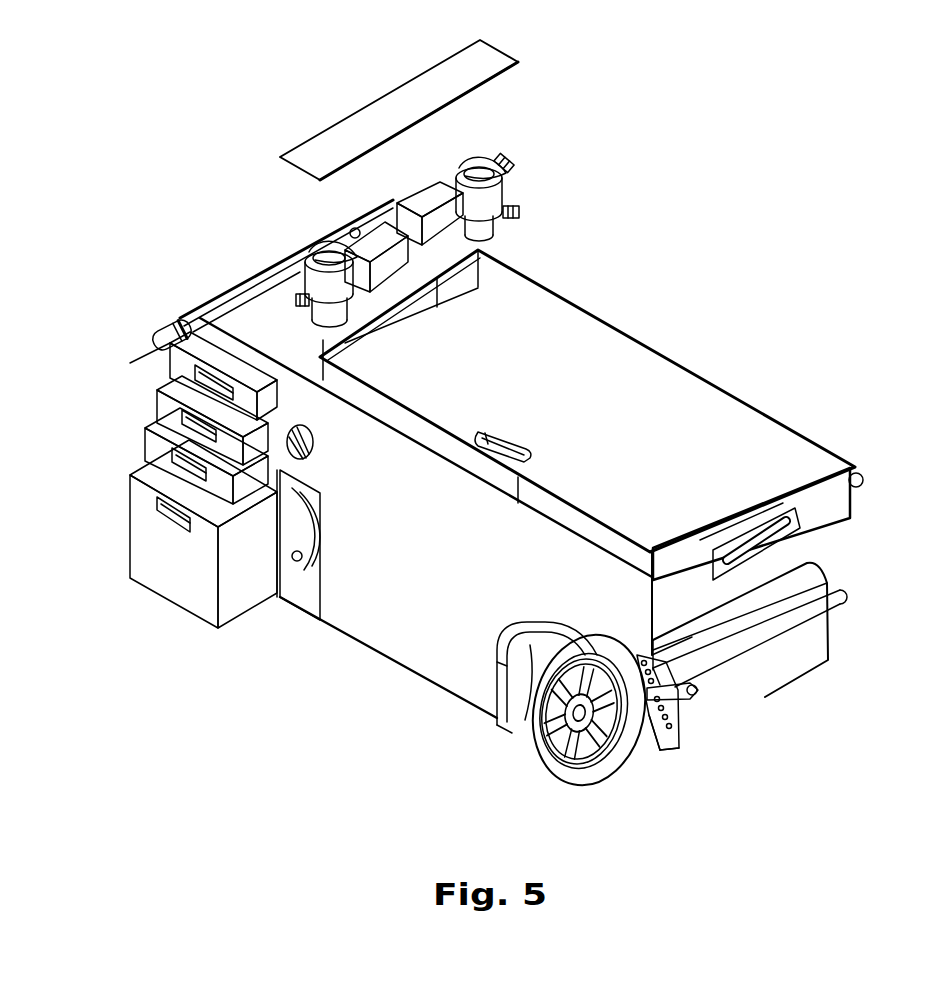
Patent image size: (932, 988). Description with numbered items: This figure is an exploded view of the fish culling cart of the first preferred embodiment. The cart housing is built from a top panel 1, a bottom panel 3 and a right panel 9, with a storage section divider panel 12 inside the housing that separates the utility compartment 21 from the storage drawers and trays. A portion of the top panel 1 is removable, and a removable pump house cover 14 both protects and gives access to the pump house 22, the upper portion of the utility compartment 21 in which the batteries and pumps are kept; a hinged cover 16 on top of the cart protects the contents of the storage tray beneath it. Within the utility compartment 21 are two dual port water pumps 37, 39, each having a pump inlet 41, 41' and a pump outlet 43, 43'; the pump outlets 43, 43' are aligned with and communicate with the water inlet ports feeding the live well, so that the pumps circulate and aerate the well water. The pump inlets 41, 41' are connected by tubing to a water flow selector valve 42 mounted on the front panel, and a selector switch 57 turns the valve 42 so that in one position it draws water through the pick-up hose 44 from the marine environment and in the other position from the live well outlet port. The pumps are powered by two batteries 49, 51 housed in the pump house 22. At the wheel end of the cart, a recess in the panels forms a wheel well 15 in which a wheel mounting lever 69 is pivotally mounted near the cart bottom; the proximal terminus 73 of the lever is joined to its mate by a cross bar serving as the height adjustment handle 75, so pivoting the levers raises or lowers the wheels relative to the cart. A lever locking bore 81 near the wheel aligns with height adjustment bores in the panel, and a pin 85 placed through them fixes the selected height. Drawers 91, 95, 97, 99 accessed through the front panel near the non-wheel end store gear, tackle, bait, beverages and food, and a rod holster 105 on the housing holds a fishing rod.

The top panel 1 is at (640, 388).
The bottom panel 3 is at (432, 686).
The right panel 9 is at (816, 647).
The storage section divider panel 12 is at (437, 307).
The pump house cover 14 is at (493, 55).
The wheel well 15 is at (528, 652).
The hinged cover 16 is at (262, 292).
The utility compartment 21 is at (295, 577).
The pump house 22 is at (378, 322).
The water pump 37 is at (318, 258).
The water pump 39 is at (500, 203).
The pump inlet 41 is at (203, 304).
The pump inlet 41' is at (539, 138).
The water flow selector valve 42 is at (290, 452).
The pump outlet 43 is at (130, 346).
The pump outlet 43' is at (566, 199).
The pick-up hose 44 is at (308, 570).
The battery 49 is at (378, 222).
The battery 51 is at (435, 185).
The selector switch 57 is at (295, 452).
The wheel mounting lever 69 is at (698, 696).
The proximal terminus of wheel lever 73 is at (698, 692).
The height adjustment handle 75 is at (760, 648).
The lever locking bore 81 is at (672, 706).
The pin 85 is at (639, 700).
The drawer 91 is at (140, 500).
The drawer 95 is at (152, 446).
The drawer 97 is at (165, 406).
The drawer 99 is at (178, 364).
The rod holster 105 is at (660, 545).